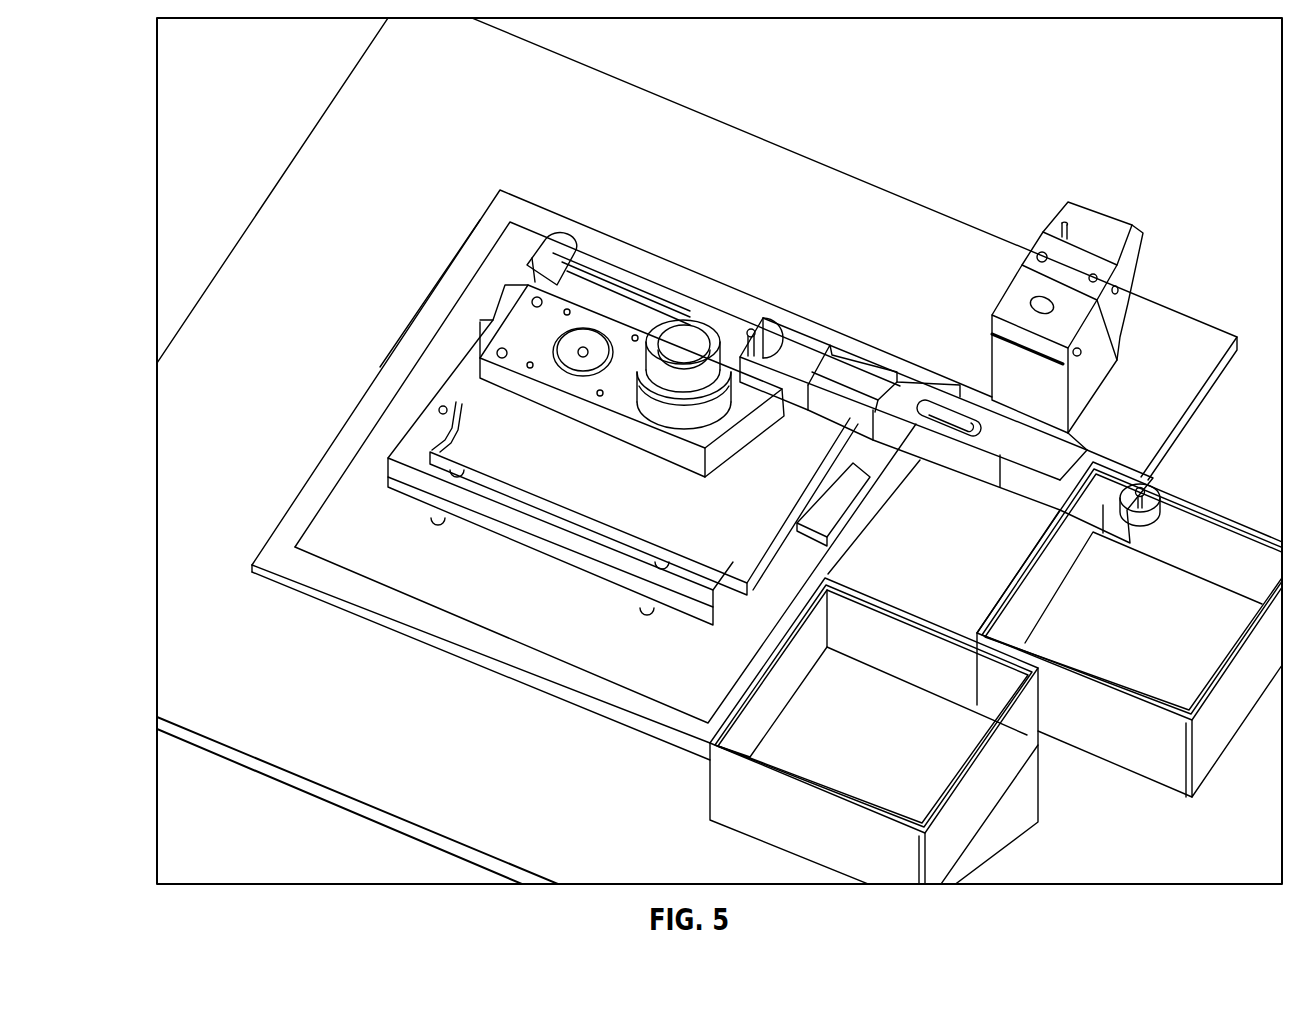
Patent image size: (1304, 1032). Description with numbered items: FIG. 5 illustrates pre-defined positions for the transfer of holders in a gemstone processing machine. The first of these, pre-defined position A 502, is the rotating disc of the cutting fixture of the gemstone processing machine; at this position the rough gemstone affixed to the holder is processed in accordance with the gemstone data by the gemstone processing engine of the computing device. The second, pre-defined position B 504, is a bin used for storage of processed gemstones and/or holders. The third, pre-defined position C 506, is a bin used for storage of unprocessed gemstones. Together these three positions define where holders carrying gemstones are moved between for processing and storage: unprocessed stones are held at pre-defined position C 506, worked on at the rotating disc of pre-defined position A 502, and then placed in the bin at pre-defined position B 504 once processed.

The pre-defined position A 502 is at (688, 333).
The pre-defined position B 504 is at (1203, 548).
The pre-defined position C 506 is at (767, 818).